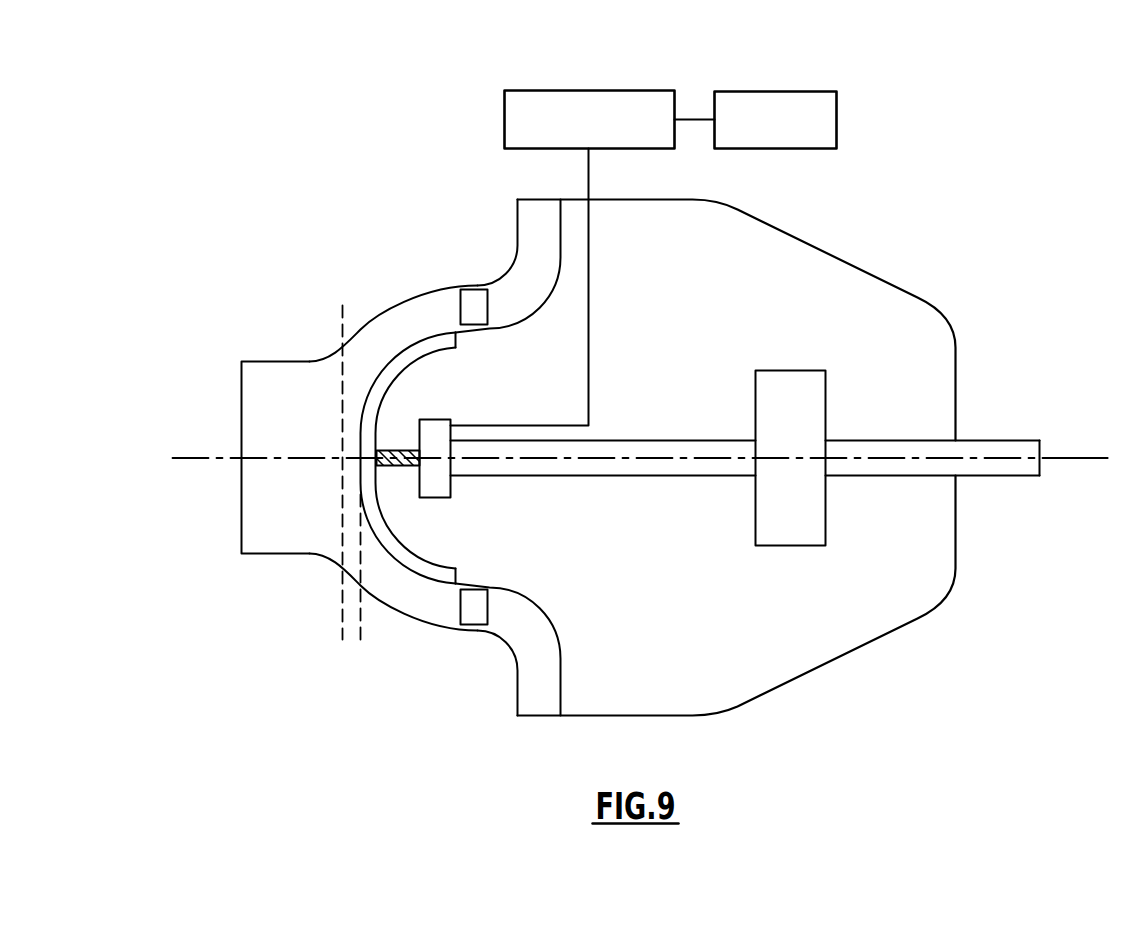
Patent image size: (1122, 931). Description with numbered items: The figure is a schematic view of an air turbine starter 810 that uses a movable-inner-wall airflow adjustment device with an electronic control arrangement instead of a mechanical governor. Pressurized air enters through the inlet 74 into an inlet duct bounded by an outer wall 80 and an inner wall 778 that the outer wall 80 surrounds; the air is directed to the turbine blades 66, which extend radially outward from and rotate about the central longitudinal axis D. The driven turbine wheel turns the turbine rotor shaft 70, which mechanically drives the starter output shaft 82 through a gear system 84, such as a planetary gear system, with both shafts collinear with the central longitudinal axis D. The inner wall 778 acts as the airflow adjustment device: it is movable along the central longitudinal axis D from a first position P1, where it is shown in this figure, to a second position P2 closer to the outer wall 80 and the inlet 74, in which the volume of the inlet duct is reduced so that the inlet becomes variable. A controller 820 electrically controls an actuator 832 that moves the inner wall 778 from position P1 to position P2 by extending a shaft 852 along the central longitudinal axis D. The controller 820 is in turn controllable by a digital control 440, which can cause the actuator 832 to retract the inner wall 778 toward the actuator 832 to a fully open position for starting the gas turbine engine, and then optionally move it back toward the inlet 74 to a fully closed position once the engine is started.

The air turbine starter 810 is at (838, 220).
The inlet 74 is at (220, 403).
The outer wall 80 is at (358, 326).
The inner wall 778 is at (357, 427).
The shaft 852 is at (391, 465).
The actuator 832 is at (431, 424).
The turbine rotor shaft 70 is at (642, 444).
The starter output shaft 82 is at (1022, 440).
The gear system 84 is at (792, 378).
The turbine blades 66 is at (470, 296).
The controller 820 is at (502, 113).
The digital control 440 is at (755, 89).
The first position P1 is at (359, 640).
The second position P2 is at (338, 624).
The central longitudinal axis D is at (1068, 458).